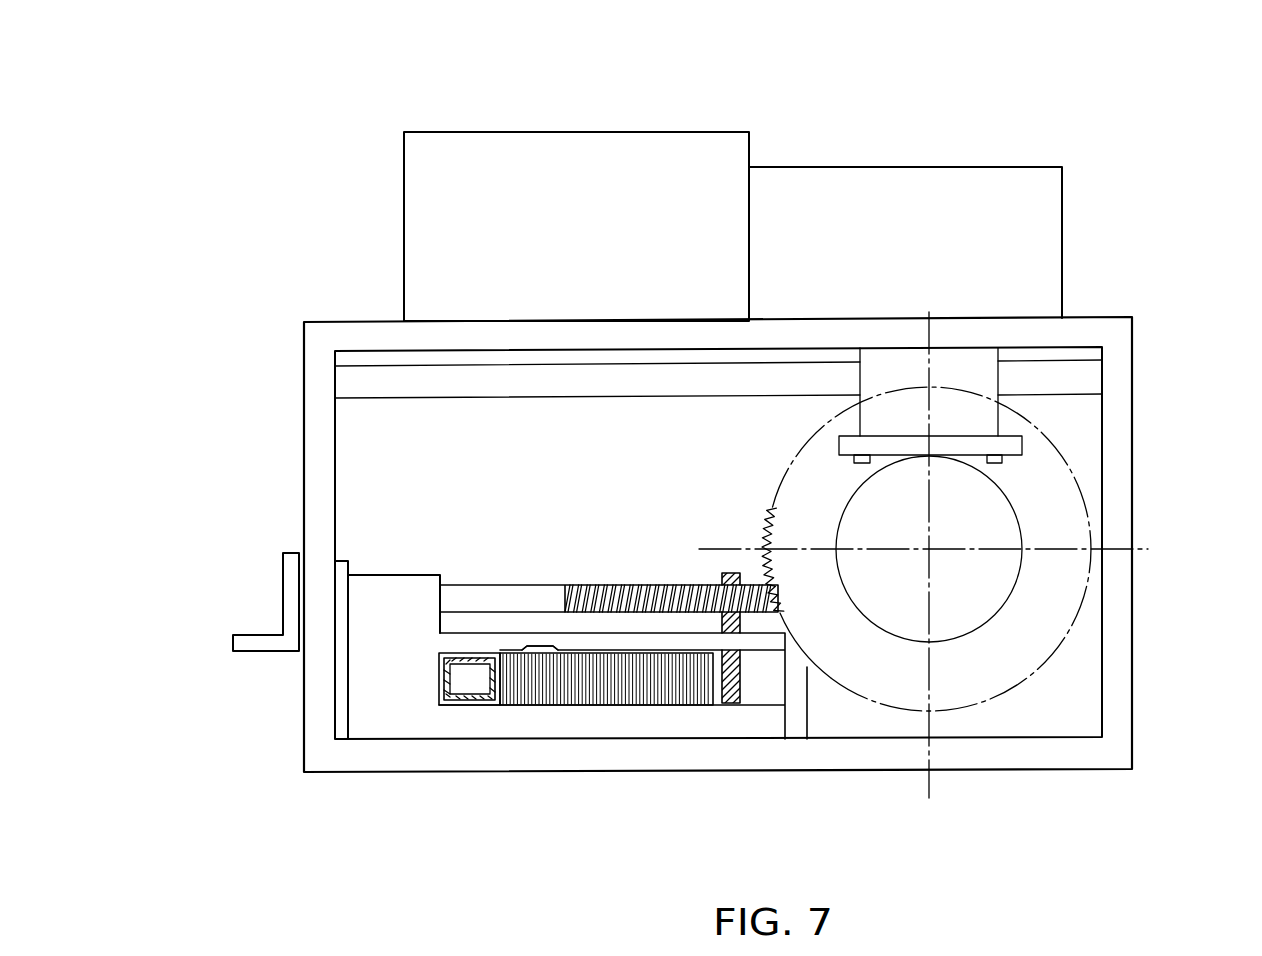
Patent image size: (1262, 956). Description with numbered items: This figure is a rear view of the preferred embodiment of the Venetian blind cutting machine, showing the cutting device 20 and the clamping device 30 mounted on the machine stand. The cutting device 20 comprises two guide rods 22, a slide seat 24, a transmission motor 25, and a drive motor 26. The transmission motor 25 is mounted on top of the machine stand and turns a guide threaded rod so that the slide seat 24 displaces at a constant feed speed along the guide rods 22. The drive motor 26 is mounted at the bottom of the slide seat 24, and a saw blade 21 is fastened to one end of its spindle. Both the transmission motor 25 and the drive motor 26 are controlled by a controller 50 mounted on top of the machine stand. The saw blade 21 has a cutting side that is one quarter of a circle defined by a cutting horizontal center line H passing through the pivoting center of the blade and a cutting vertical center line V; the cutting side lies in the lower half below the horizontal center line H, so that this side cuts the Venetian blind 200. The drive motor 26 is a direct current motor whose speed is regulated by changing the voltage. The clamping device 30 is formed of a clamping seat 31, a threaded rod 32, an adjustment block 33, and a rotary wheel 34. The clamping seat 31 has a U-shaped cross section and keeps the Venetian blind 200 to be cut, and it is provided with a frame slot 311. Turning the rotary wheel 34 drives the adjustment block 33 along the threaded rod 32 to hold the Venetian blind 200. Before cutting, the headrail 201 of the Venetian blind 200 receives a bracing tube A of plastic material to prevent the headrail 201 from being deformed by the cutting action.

The cutting device 20 is at (1213, 237).
The saw blade 21 is at (1091, 517).
The guide rods 22 is at (1087, 380).
The slide seat 24 is at (960, 443).
The transmission motor 25 is at (916, 181).
The drive motor 26 is at (997, 512).
The clamping device 30 is at (370, 565).
The clamping seat 31 is at (400, 583).
The threaded rod 32 is at (624, 590).
The adjustment block 33 is at (732, 685).
The rotary wheel 34 is at (284, 590).
The controller 50 is at (596, 126).
The Venetian blind 200 is at (620, 684).
The headrail 201 is at (483, 703).
The frame slot 311 is at (537, 652).
The bracing tube A is at (440, 680).
The cutting horizontal center line H is at (923, 531).
The cutting vertical center line V is at (942, 570).